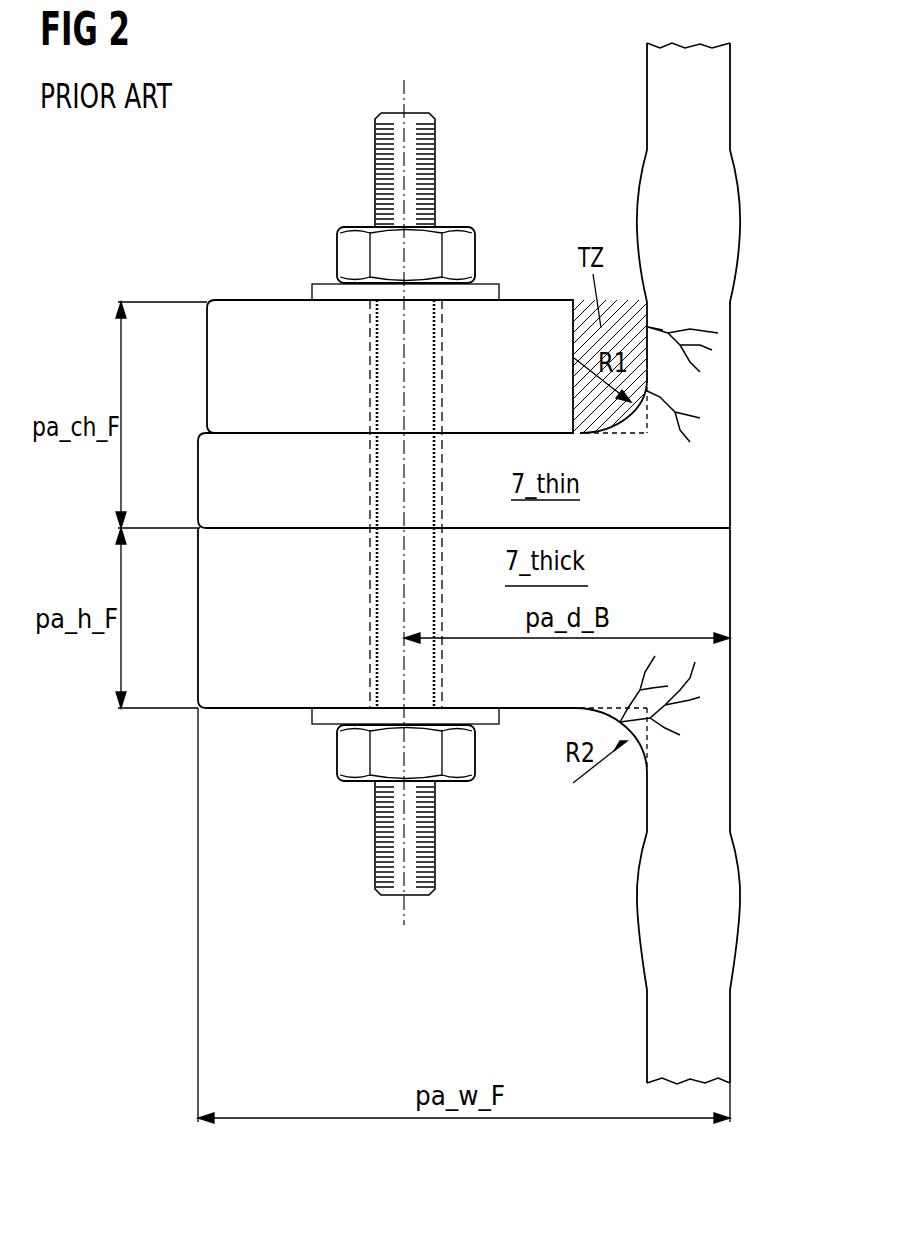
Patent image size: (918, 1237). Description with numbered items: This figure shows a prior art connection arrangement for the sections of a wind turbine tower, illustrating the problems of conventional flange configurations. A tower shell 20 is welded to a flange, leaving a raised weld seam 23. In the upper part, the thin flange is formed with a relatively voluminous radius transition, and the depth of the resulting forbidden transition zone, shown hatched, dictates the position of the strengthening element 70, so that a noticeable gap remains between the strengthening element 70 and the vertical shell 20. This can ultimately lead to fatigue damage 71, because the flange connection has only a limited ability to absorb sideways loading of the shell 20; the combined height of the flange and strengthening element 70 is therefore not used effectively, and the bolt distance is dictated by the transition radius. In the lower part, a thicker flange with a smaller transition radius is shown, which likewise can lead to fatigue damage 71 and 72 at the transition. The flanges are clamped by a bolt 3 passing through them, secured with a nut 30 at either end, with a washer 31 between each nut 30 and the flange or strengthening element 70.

The bolt 3 is at (375, 157).
The nut 30 is at (343, 246).
The washer 31 is at (318, 293).
The strengthening element 70 is at (222, 368).
The shell 20 is at (718, 108).
The weld seam 23 is at (727, 236).
The fatigue damage 71 is at (700, 372).
The cracks at lower fillet 72 is at (697, 687).